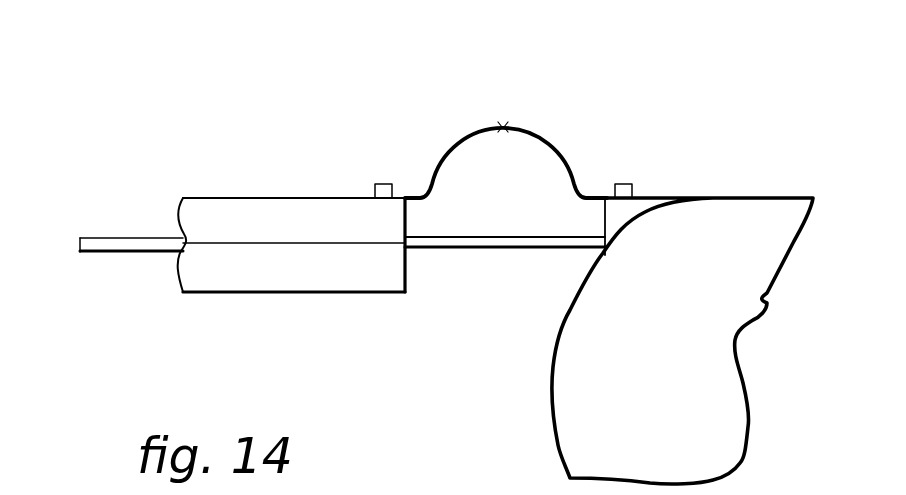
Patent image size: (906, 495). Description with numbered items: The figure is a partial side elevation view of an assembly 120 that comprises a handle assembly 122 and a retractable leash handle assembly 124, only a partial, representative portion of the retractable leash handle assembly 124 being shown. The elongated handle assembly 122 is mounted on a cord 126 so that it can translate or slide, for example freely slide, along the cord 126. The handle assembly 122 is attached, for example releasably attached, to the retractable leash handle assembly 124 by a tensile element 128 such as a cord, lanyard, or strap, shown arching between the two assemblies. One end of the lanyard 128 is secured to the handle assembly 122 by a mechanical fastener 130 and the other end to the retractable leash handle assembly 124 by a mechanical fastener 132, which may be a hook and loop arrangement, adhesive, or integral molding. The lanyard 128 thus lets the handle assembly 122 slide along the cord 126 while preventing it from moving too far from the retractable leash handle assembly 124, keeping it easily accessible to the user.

The assembly 120 is at (690, 113).
The handle assembly 122 is at (277, 292).
The retractable leash handle assembly 124 is at (670, 197).
The cord 126 is at (470, 252).
The tensile element 128 is at (483, 130).
The mechanical fastener 130 is at (385, 183).
The mechanical fastener 132 is at (623, 183).